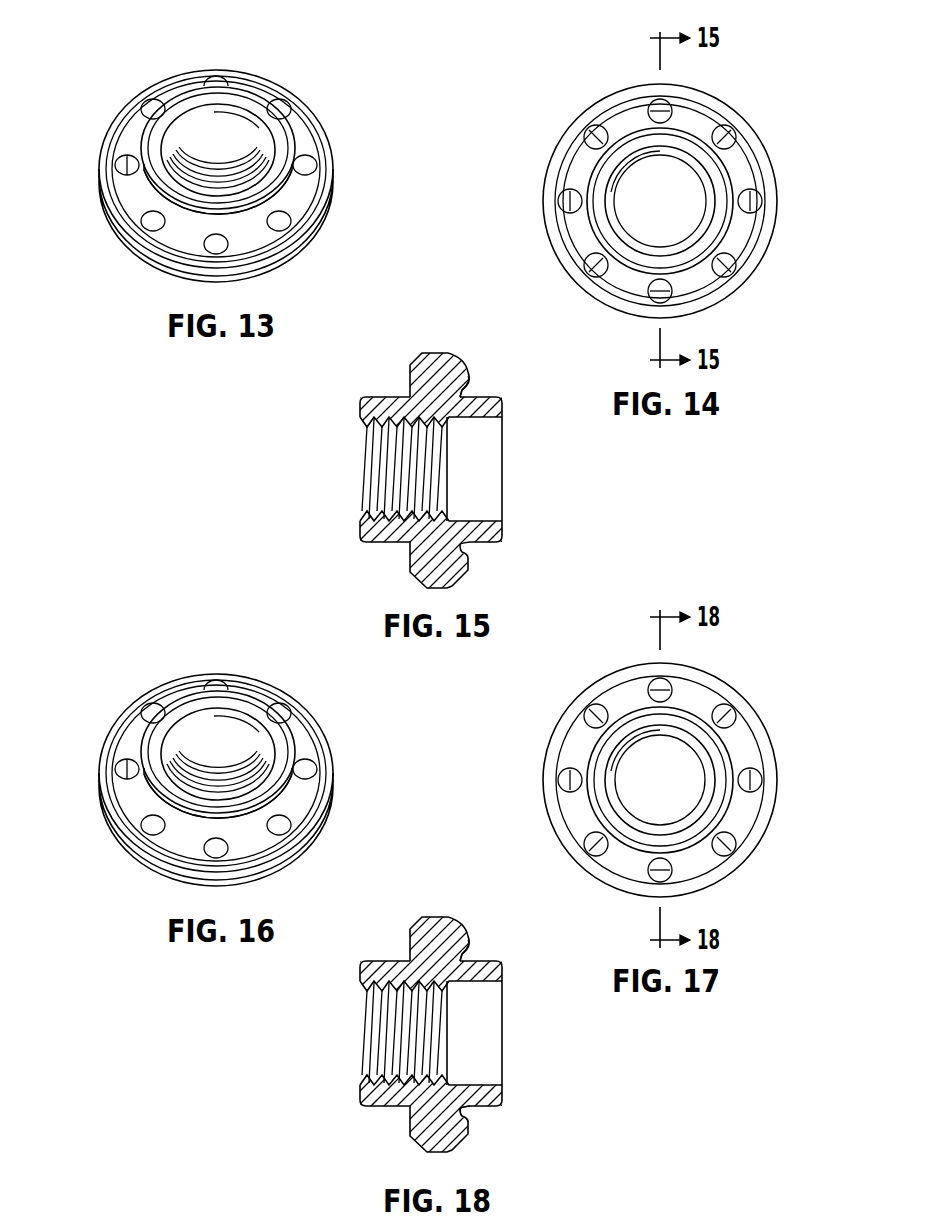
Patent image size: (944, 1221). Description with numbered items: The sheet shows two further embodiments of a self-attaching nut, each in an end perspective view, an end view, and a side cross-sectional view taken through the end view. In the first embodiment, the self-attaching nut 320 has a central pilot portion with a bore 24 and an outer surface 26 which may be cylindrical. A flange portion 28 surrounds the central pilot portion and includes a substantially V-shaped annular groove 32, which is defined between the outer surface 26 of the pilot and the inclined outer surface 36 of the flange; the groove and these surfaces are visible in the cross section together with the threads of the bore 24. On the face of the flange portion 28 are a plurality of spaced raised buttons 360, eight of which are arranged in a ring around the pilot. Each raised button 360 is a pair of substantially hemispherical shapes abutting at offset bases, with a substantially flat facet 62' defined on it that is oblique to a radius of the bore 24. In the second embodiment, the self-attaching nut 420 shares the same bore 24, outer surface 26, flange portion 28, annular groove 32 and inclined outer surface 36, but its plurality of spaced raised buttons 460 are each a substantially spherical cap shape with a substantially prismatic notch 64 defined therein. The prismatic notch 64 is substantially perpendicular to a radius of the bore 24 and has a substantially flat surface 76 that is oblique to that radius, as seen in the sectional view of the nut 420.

In FIG. 13, the bore 24 is at (202, 110).
In FIG. 14, the bore 24 is at (660, 201).
In FIG. 16, the bore 24 is at (218, 715).
In FIG. 17, the bore 24 is at (660, 780).
In FIG. 13, the outer surface 26 is at (293, 138).
In FIG. 14, the outer surface 26 is at (660, 201).
In FIG. 15, the outer surface 26 is at (480, 545).
In FIG. 16, the outer surface 26 is at (256, 754).
In FIG. 17, the outer surface 26 is at (660, 780).
In FIG. 18, the outer surface 26 is at (492, 1112).
In FIG. 15, the flange portion 28 is at (437, 352).
In FIG. 18, the flange portion 28 is at (431, 989).
In FIG. 13, the V-shaped annular groove 32 is at (287, 184).
In FIG. 15, the V-shaped annular groove 32 is at (457, 393).
In FIG. 16, the V-shaped annular groove 32 is at (262, 798).
In FIG. 18, the V-shaped annular groove 32 is at (503, 962).
In FIG. 15, the inclined outer surface 36 is at (470, 368).
In FIG. 18, the inclined outer surface 36 is at (472, 929).
In FIG. 13, the flat facet 62' is at (116, 119).
In FIG. 16, the prismatic notch 64 is at (114, 723).
In FIG. 18, the prismatic notch 64 is at (505, 938).
In FIG. 18, the flat surface 76 is at (506, 1129).
In FIG. 13, the self-attaching nut 320 is at (289, 83).
In FIG. 14, the self-attaching nut 320 is at (660, 201).
In FIG. 13, the spaced raised buttons 360 is at (115, 160).
In FIG. 14, the spaced raised buttons 360 is at (592, 268).
In FIG. 16, the self-attaching nut 420 is at (232, 761).
In FIG. 17, the self-attaching nut 420 is at (660, 780).
In FIG. 16, the spaced raised buttons 460 is at (174, 769).
In FIG. 17, the spaced raised buttons 460 is at (658, 780).